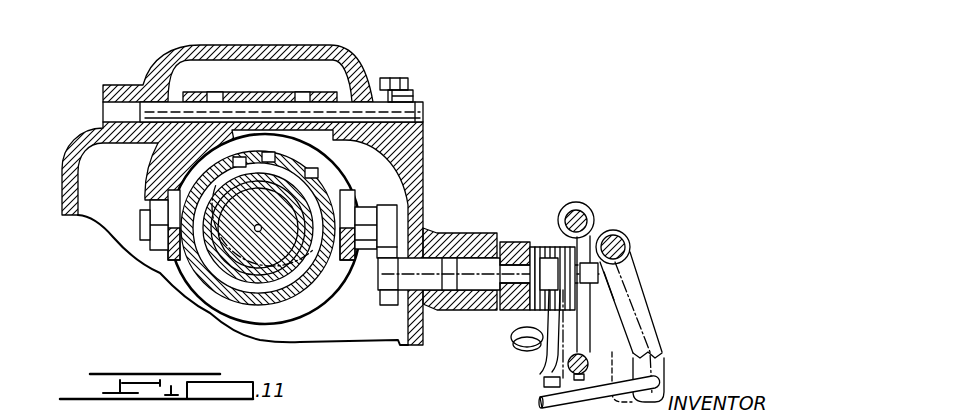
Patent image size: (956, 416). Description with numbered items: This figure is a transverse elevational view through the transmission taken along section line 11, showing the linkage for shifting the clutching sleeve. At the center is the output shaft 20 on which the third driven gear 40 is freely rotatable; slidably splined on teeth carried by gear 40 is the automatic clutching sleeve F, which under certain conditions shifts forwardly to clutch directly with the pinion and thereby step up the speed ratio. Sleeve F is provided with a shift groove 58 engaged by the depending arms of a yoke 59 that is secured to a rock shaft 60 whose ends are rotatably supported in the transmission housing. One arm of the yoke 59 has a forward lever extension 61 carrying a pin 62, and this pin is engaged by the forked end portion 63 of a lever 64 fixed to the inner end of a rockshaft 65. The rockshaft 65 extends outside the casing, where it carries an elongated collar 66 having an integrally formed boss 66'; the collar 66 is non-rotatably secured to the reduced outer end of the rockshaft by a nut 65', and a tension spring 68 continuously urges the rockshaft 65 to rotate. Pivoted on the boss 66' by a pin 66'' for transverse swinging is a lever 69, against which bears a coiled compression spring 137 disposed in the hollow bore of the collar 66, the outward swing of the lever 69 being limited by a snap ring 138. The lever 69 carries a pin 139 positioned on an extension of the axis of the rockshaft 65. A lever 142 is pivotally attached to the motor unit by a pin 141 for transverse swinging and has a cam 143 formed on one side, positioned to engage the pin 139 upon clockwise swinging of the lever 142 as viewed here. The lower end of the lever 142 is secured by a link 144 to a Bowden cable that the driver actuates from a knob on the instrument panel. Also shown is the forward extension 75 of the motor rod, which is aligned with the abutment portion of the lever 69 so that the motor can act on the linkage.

The section line 11 is at (68, 150).
The output shaft 20 is at (258, 228).
The third driven gear 40 is at (217, 260).
The automatic clutching sleeve F is at (197, 265).
The shift groove 58 is at (217, 310).
The yoke 59 is at (158, 172).
The rock shaft 60 is at (420, 103).
The forward lever extension 61 is at (381, 194).
The pin 62 is at (397, 222).
The forked end portion 63 is at (388, 205).
The lever 64 is at (378, 262).
The rockshaft 65 is at (460, 282).
The elongated collar 66 is at (514, 258).
The nut 65' is at (552, 245).
The boss 66' is at (597, 262).
The pin 66'' is at (597, 193).
The snap ring 138 is at (600, 240).
The pin 141 is at (628, 240).
The pin 139 is at (628, 266).
The cam 143 is at (598, 277).
The lever 142 is at (662, 330).
The lever 69 is at (584, 353).
The tension spring 68 is at (510, 350).
The coiled compression spring 137 is at (545, 362).
The forward extension 75 is at (558, 381).
The link 144 is at (540, 398).